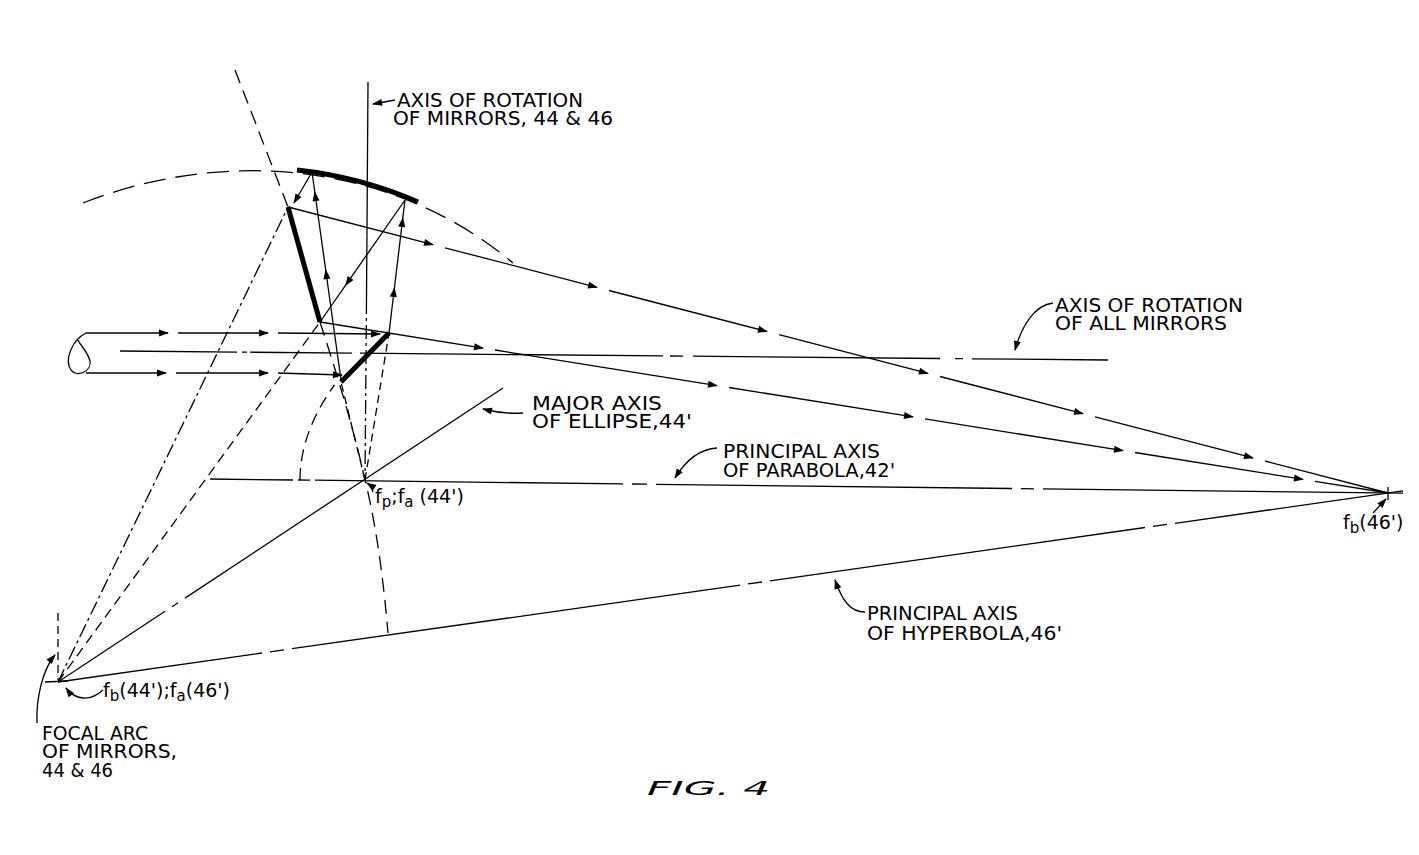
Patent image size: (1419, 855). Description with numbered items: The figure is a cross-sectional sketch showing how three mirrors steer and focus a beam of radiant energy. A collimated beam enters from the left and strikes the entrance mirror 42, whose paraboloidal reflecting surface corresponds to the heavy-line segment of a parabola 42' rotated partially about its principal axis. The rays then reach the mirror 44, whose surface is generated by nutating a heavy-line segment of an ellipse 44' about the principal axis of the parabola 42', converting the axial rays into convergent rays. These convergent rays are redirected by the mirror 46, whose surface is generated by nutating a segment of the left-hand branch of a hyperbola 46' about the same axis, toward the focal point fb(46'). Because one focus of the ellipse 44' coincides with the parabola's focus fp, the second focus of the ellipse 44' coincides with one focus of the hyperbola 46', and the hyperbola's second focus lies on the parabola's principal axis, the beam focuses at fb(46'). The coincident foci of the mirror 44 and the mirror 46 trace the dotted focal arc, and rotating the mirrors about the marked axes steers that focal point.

The entrance mirror 42 is at (379, 357).
The mirror 44 is at (357, 178).
The mirror 46 is at (282, 264).
The parabola 42' is at (203, 432).
The ellipse 44' is at (345, 217).
The hyperbola 46' is at (352, 330).